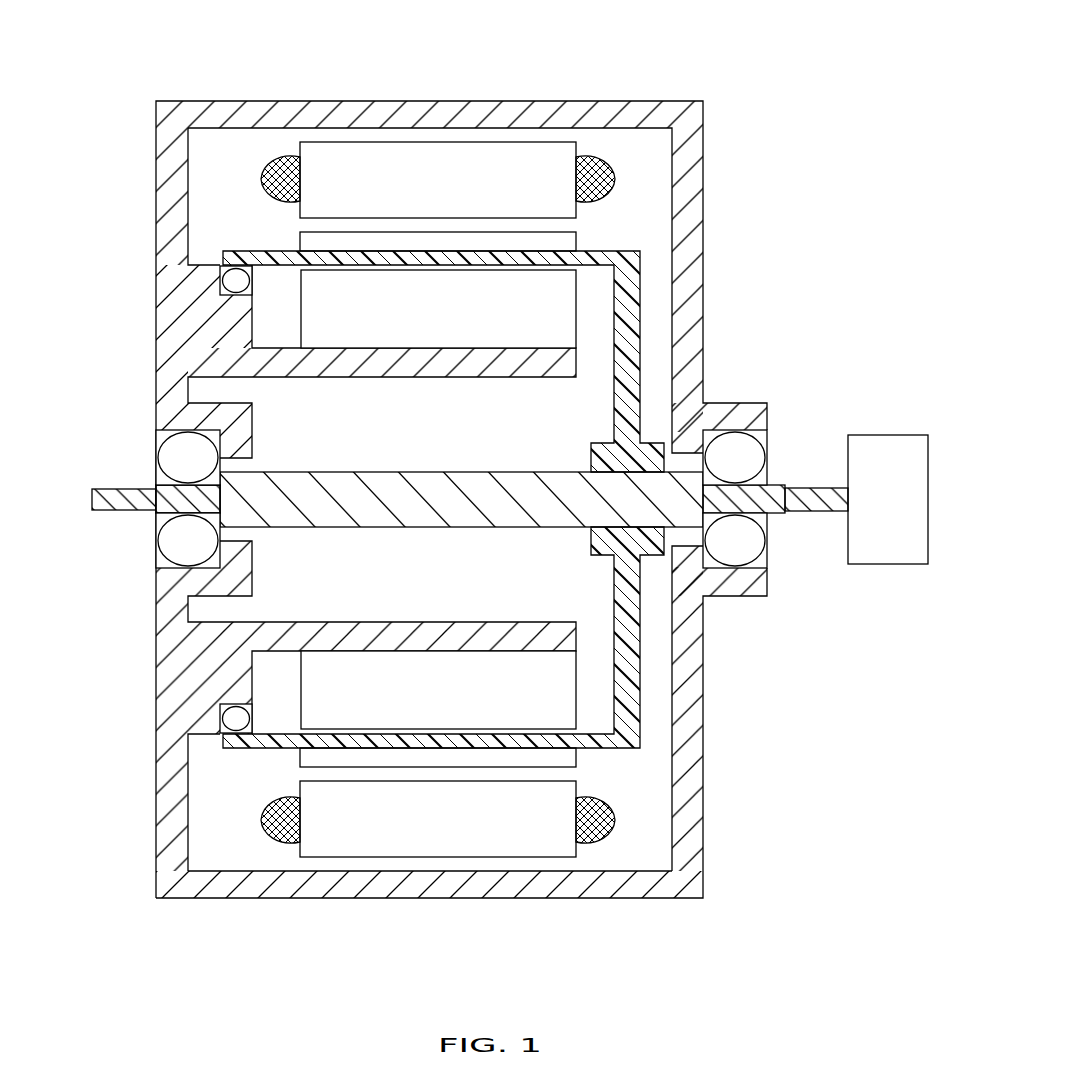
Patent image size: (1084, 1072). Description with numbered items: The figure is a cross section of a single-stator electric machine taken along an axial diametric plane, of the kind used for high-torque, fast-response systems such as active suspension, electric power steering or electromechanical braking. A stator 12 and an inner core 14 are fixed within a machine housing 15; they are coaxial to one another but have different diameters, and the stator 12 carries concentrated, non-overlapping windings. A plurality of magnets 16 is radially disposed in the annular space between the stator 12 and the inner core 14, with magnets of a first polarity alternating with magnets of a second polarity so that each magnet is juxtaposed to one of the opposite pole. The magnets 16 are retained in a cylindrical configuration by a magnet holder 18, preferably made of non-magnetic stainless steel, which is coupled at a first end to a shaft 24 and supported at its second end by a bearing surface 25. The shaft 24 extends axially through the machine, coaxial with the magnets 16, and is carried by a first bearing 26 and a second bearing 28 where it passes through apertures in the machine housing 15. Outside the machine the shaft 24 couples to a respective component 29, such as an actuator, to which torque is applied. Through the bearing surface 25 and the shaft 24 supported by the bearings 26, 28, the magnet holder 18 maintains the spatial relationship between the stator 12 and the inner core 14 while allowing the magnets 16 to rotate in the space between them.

The stator 12 is at (527, 160).
The inner core 14 is at (576, 287).
The machine housing 15 is at (377, 113).
The plurality of magnets 16 is at (305, 238).
The magnet holder 18 is at (637, 350).
The shaft 24 is at (795, 485).
The bearing surface 25 is at (232, 287).
The first bearing 26 is at (185, 534).
The second bearing 28 is at (743, 547).
The respective component 29 is at (888, 499).